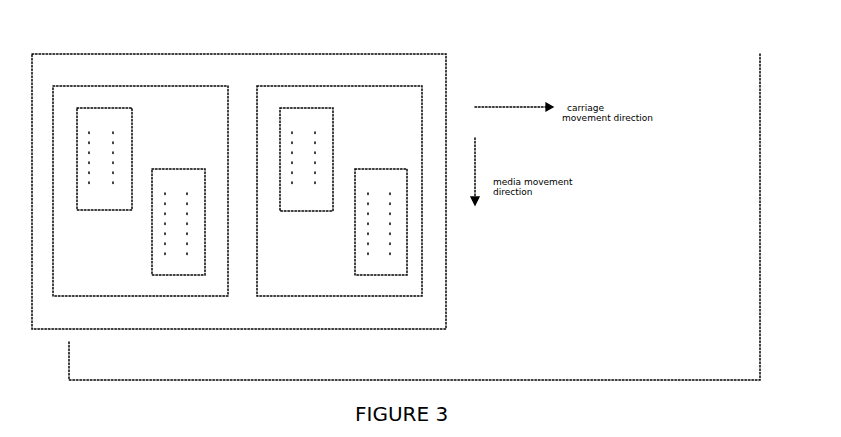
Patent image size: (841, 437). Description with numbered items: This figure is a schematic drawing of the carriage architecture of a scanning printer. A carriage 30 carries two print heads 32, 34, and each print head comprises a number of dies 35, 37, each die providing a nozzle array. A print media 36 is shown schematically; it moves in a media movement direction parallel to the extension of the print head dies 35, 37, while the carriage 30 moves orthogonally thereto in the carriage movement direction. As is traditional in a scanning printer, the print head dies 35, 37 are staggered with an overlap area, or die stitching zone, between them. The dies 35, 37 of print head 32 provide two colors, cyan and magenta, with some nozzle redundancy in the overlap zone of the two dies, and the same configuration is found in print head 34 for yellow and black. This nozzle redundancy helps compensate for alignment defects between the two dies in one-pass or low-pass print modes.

The carriage 30 is at (53, 63).
The print head 32 is at (202, 95).
The print head 34 is at (408, 100).
The die 35 is at (78, 115).
The die 37 is at (158, 173).
The print media 36 is at (710, 348).